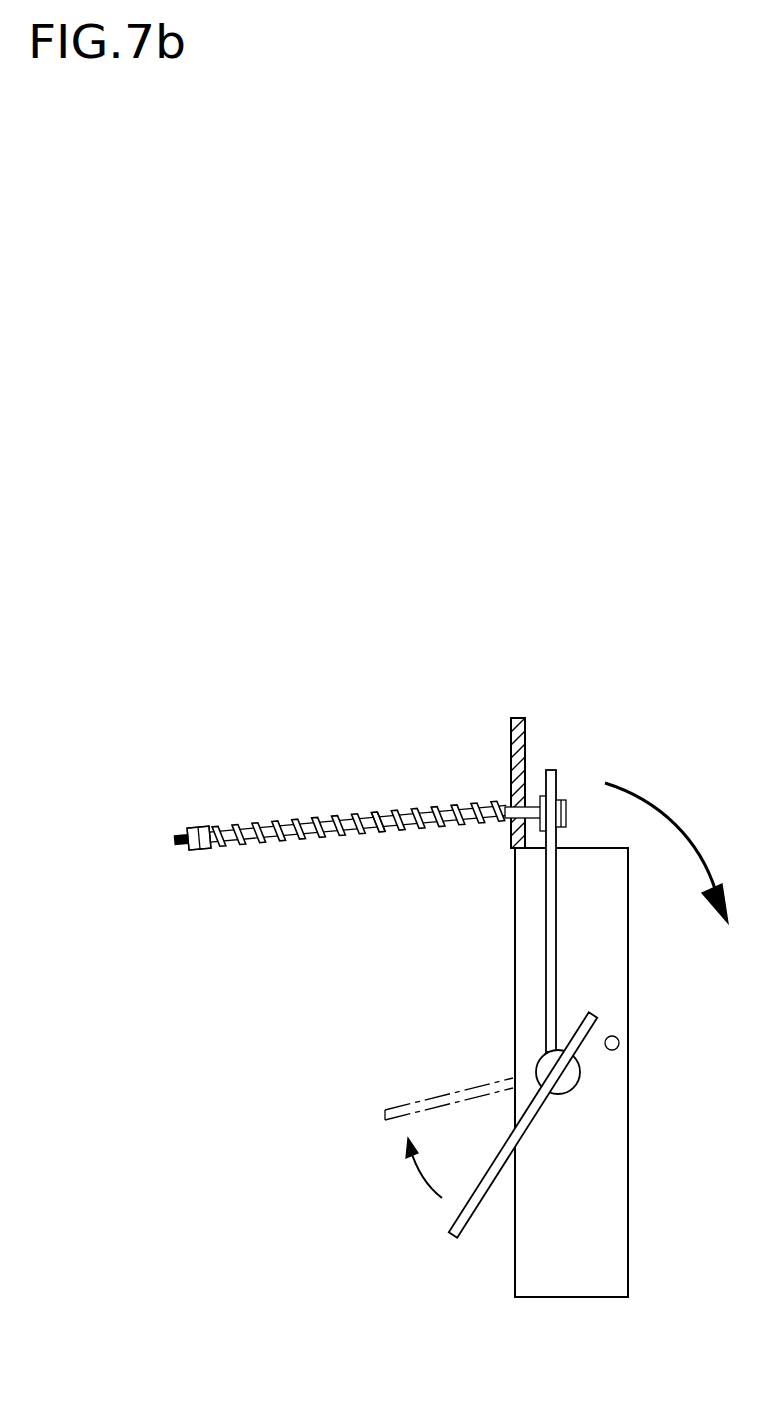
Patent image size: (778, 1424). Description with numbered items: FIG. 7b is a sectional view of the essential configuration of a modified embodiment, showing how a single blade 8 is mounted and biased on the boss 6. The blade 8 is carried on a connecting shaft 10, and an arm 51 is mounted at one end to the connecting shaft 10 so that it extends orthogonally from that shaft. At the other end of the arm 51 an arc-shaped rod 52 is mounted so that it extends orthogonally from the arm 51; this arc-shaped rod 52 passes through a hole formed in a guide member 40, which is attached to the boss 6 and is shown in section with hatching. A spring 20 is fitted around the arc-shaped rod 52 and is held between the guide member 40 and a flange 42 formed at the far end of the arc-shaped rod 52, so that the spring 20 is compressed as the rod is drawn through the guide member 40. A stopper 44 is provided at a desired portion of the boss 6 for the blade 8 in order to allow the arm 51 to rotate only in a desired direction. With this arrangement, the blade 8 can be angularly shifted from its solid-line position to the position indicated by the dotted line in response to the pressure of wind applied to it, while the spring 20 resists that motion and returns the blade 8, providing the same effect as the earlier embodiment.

The boss 6 is at (620, 1262).
The blade 8 is at (528, 1133).
The connecting shaft 10 is at (575, 1083).
The spring 20 is at (353, 805).
The guide member 40 is at (512, 740).
The flange 42 is at (198, 822).
The stopper 44 is at (620, 1043).
The arm 51 is at (557, 778).
The arc-shaped rod 52 is at (377, 830).